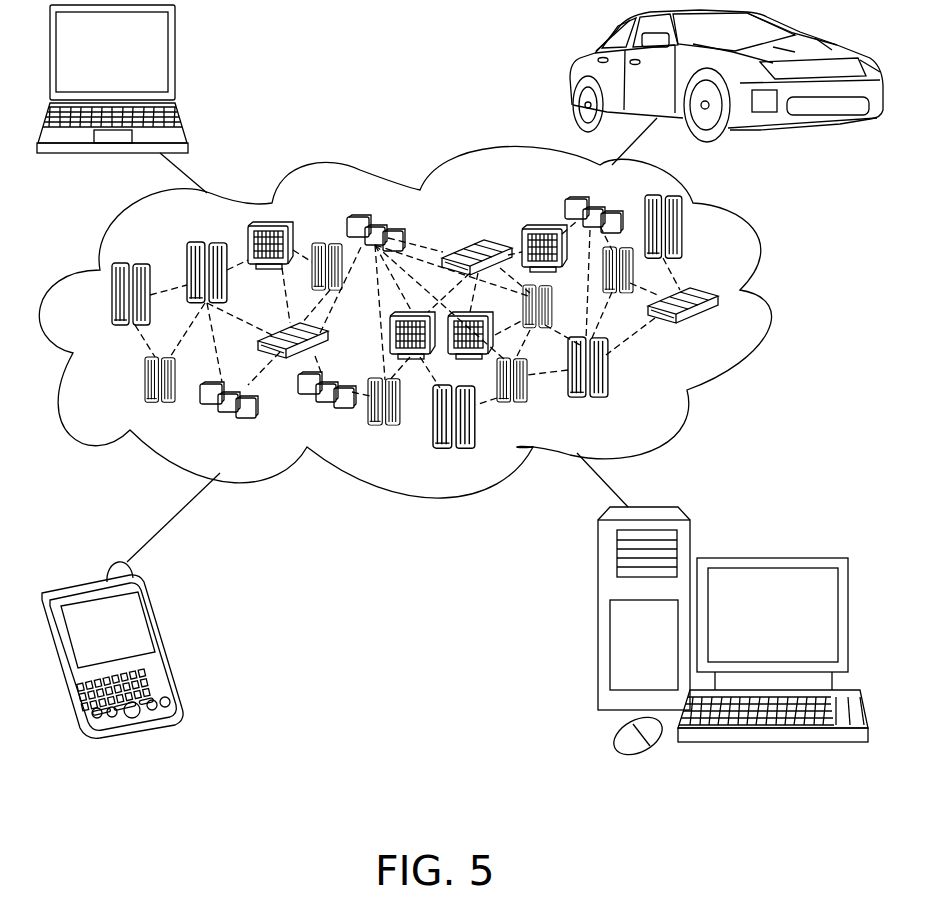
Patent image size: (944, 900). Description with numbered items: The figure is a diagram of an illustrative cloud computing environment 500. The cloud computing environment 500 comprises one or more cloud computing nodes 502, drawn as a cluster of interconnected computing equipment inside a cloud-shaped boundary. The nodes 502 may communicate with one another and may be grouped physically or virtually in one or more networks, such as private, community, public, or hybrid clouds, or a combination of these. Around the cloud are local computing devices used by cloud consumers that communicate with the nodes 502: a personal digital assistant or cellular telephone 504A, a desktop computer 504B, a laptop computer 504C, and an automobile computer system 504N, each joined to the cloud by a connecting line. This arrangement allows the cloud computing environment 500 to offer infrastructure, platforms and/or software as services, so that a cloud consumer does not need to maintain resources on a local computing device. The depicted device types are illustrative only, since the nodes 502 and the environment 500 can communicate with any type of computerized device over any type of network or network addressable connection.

The cloud computing environment 500 is at (752, 284).
The cloud computing nodes 502 is at (715, 326).
The personal digital assistant or cellular telephone 504A is at (158, 612).
The desktop computer 504B is at (760, 557).
The laptop computer 504C is at (177, 36).
The automobile computer system 504N is at (574, 82).